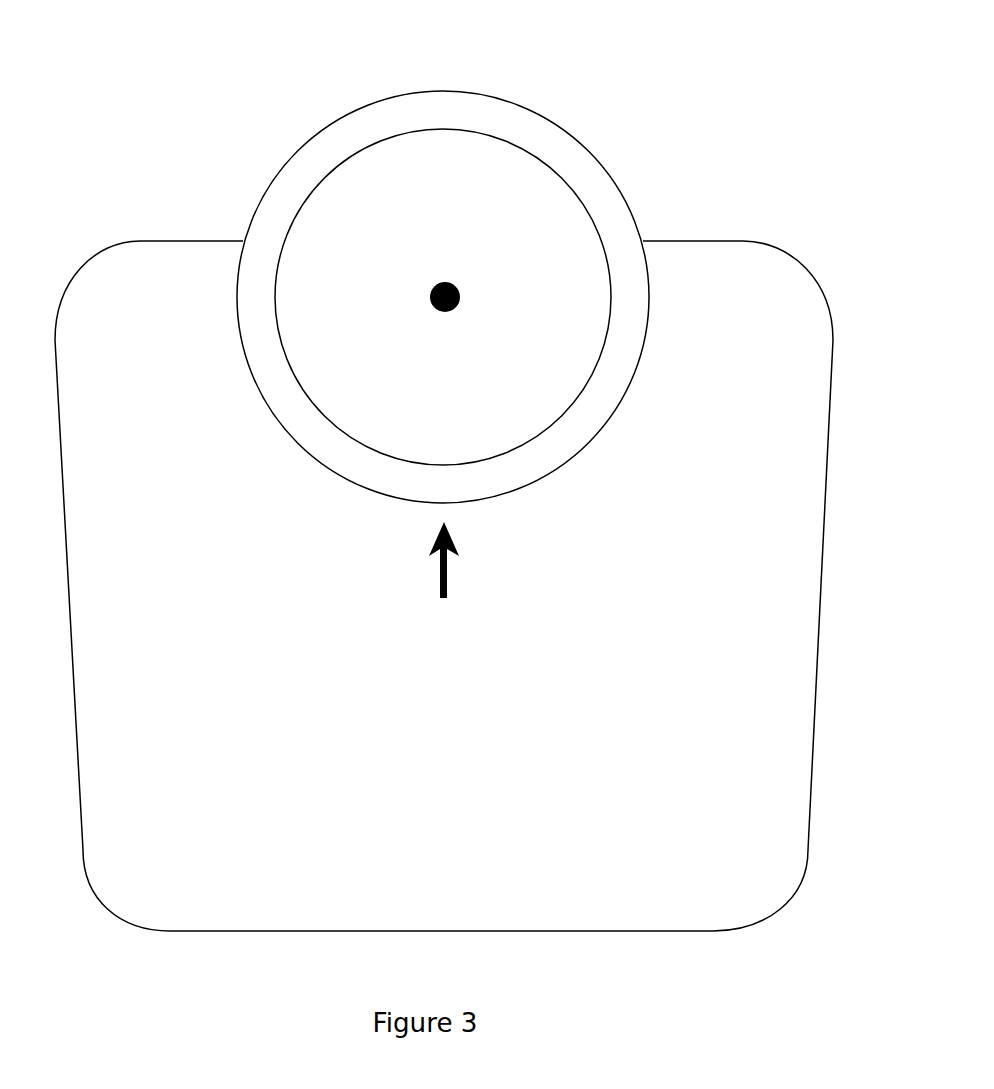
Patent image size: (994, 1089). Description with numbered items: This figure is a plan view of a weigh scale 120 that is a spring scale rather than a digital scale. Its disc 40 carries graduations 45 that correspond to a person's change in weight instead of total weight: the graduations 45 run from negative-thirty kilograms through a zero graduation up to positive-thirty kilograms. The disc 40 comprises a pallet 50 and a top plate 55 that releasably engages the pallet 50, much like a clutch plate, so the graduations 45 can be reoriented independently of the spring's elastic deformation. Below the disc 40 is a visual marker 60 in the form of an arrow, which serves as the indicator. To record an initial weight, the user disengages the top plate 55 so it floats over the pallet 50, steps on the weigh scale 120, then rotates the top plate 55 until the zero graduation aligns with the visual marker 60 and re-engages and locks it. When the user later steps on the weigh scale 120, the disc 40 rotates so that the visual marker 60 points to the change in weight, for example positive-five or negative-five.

The weigh scale 120 is at (148, 120).
The disc 40 is at (366, 72).
The graduations 45 is at (298, 342).
The pallet 50 is at (612, 380).
The top plate 55 is at (550, 195).
The visual marker 60 is at (475, 540).